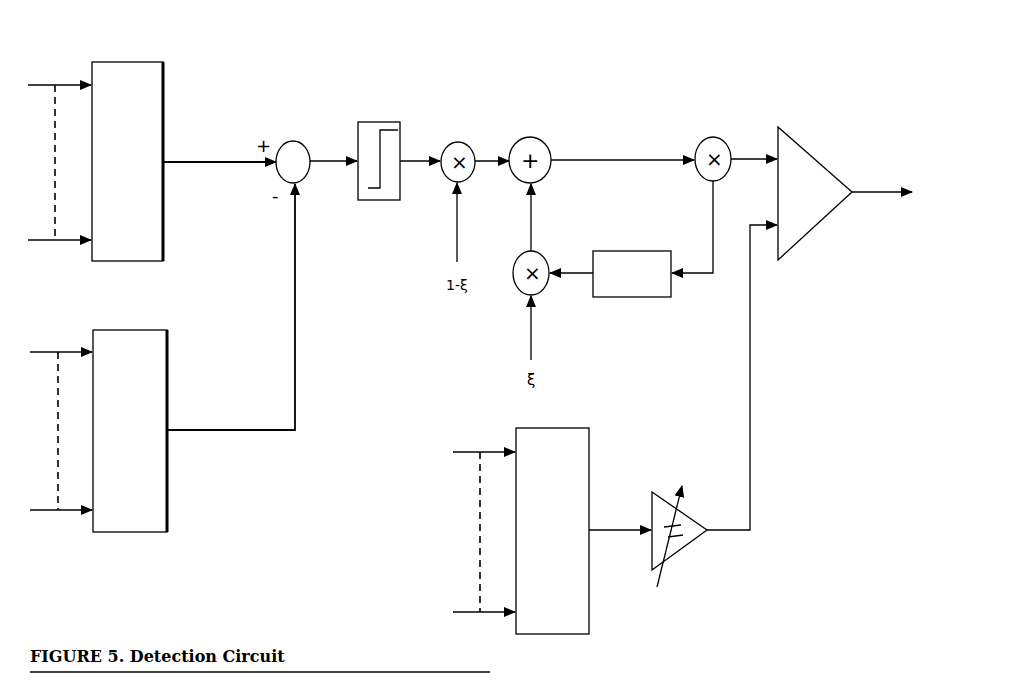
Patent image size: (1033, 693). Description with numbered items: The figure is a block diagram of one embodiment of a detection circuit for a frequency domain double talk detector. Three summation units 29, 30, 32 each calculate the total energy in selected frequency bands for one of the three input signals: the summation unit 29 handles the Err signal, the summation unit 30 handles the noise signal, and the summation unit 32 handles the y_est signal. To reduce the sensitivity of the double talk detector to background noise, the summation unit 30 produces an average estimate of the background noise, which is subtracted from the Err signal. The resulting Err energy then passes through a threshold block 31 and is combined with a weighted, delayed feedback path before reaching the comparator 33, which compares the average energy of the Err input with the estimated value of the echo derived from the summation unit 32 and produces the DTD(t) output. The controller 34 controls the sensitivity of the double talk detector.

The summation unit 29 is at (129, 22).
The summation unit 30 is at (132, 291).
The threshold (step) block 31 is at (379, 81).
The summation unit 32 is at (553, 394).
The comparator 33 is at (780, 92).
The controller 34 is at (634, 211).